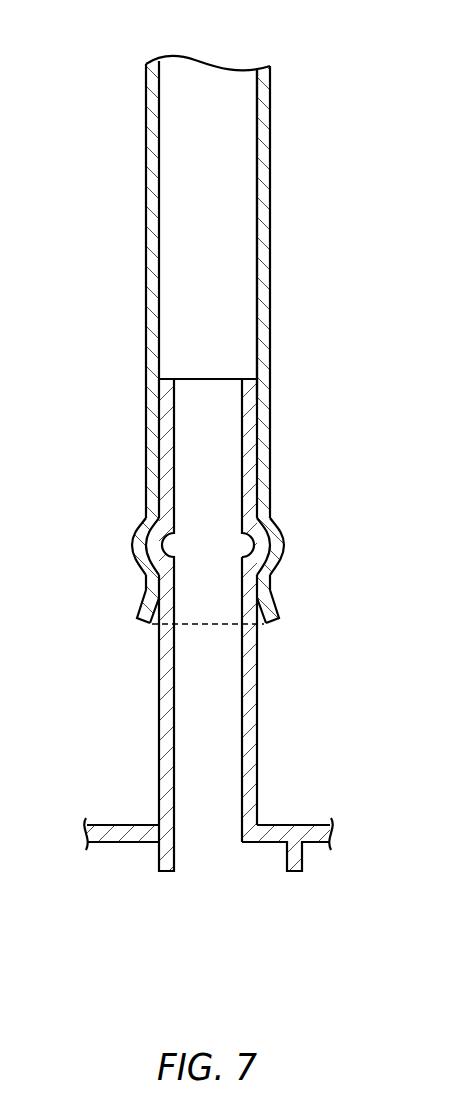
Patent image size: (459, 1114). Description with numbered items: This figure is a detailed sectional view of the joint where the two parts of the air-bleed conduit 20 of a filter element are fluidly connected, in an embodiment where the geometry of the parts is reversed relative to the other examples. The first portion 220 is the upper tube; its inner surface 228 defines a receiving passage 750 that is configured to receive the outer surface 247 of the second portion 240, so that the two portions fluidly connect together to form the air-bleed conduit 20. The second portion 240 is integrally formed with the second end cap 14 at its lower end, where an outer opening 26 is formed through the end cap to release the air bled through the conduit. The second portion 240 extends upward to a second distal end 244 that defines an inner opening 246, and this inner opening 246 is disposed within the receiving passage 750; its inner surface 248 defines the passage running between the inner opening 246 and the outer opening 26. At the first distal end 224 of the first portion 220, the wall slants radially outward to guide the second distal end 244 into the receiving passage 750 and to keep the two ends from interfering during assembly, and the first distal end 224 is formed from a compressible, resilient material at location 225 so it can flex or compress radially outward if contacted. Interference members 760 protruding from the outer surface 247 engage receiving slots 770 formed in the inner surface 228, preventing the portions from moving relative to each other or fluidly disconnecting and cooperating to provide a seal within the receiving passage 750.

The air-bleed conduit 20 is at (78, 82).
The first portion 220 is at (299, 227).
The inner surface 228 is at (262, 108).
The receiving passage 750 is at (222, 238).
The receiving slots 770 is at (151, 543).
The interference members 760 is at (259, 540).
The first distal end 224 is at (146, 618).
The location of compressible and resilient material 225 is at (153, 625).
The second portion 240 is at (299, 647).
The inner opening 246 is at (198, 377).
The second distal end 244 is at (249, 377).
The outer surface 247 is at (258, 703).
The inner surface 248 is at (243, 733).
The second end cap 14 is at (320, 833).
The outer opening 26 is at (205, 835).